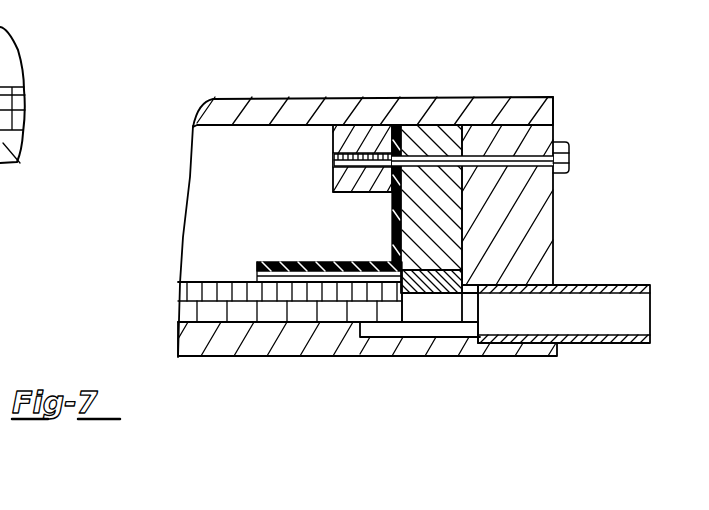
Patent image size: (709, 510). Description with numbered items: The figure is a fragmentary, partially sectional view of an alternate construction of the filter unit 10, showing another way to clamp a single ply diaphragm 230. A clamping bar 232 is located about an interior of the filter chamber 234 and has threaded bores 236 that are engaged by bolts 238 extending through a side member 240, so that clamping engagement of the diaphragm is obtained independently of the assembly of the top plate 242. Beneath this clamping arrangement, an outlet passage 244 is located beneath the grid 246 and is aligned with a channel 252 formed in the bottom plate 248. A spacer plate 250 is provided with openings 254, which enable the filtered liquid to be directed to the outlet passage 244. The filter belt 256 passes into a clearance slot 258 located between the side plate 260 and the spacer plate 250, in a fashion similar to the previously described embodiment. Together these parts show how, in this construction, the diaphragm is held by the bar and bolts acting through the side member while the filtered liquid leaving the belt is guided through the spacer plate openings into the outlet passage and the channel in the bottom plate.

The heater assembly 10 is at (533, 52).
The single ply diaphragm 230 is at (390, 210).
The clamping bar 232 is at (330, 141).
The filter chamber 234 is at (242, 200).
The threaded bores 236 is at (350, 148).
The bolts 238 is at (569, 148).
The side member 240 is at (556, 196).
The top plate 242 is at (280, 72).
The outlet passage 244 is at (578, 284).
The grid 246 is at (268, 318).
The bottom plate 248 is at (375, 358).
The spacer plate 250 is at (392, 264).
The channel 252 is at (437, 327).
The openings 254 is at (463, 292).
The filter belt 256 is at (309, 345).
The clearance slot 258 is at (430, 268).
The side plate 260 is at (468, 196).